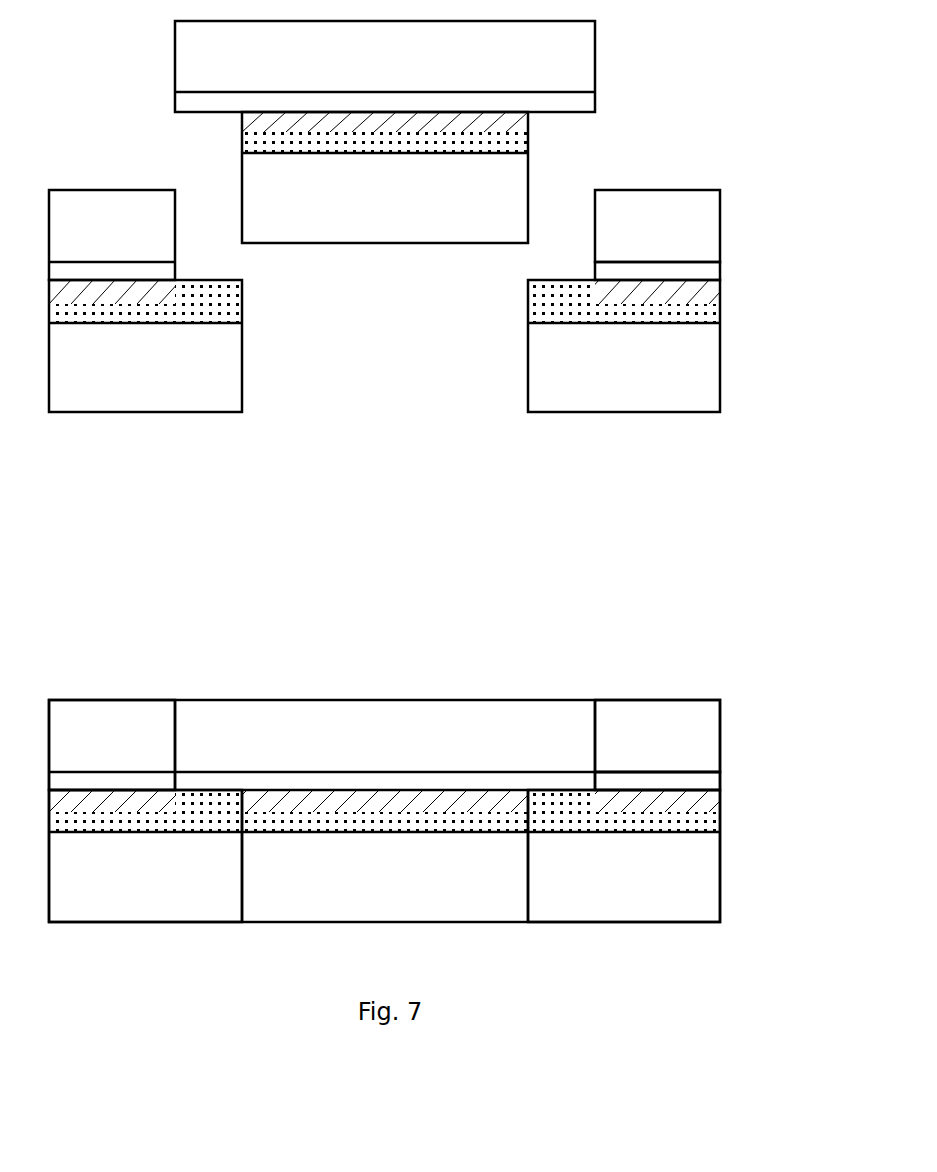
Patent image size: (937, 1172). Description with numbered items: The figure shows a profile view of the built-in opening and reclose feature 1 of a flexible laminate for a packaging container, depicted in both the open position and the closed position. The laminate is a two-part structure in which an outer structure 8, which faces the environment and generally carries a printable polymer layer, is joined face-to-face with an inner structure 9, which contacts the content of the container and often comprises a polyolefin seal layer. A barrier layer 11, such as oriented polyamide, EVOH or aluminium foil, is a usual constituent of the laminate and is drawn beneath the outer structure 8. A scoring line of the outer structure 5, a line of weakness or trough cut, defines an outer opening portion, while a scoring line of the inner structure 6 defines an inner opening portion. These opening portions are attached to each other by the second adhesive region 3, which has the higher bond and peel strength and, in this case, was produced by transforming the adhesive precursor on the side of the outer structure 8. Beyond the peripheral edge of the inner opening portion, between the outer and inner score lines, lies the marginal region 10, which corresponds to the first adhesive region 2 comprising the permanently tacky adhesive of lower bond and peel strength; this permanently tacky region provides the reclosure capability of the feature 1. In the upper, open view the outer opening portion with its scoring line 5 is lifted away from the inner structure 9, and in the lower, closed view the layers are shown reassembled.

The built-in opening and reclose feature 1 is at (494, 612).
The first adhesive region 2 is at (240, 325).
The second adhesive region 3 is at (175, 325).
The scoring line of the outer structure 5 is at (175, 244).
The scoring line of the inner structure 6 is at (242, 378).
The outer structure of the laminate 8 is at (702, 232).
The inner structure of the laminate 9 is at (702, 368).
The marginal region 10 is at (570, 113).
The barrier layer 11 is at (700, 271).